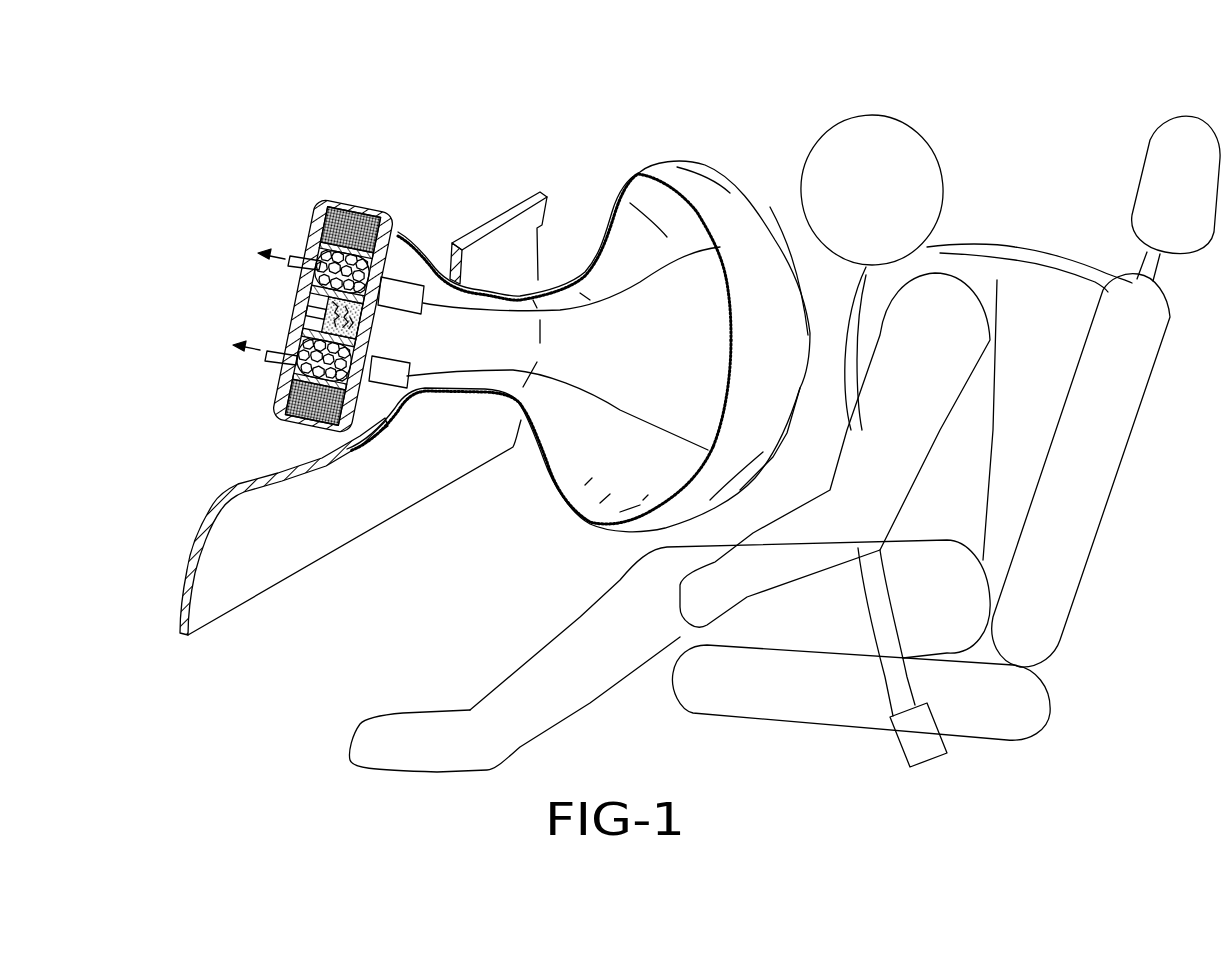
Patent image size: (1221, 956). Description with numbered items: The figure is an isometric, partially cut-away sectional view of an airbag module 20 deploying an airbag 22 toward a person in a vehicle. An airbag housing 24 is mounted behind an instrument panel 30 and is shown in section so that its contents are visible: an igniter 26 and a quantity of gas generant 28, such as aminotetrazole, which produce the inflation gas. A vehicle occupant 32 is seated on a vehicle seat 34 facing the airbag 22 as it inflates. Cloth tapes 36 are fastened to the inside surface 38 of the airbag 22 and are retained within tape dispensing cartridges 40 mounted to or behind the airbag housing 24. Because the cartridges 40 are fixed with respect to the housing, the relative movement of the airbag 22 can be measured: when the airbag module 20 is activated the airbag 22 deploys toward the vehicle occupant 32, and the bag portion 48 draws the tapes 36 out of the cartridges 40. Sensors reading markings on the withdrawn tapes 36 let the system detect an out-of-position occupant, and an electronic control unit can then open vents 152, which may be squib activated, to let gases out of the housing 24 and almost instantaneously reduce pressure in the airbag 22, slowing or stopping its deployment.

The airbag module 20 is at (456, 180).
The airbag 22 is at (628, 178).
The airbag housing 24 is at (400, 222).
The igniter 26 is at (318, 312).
The gas generant 28 is at (330, 252).
The instrument panel 30 is at (297, 488).
The vehicle occupant 32 is at (977, 282).
The vehicle seat 34 is at (810, 727).
The cloth tapes 36 is at (620, 298).
The inside surface 38 is at (727, 353).
The tape dispensing cartridges 40 is at (424, 304).
The bag portion 48 is at (718, 248).
The vents 152 is at (297, 353).